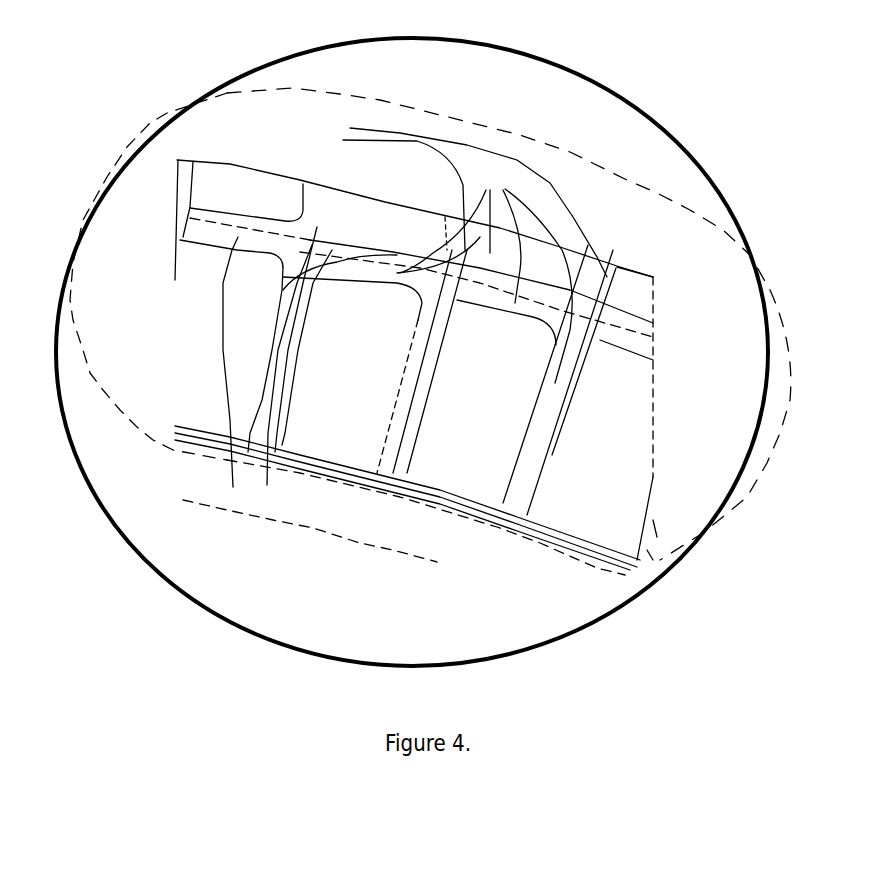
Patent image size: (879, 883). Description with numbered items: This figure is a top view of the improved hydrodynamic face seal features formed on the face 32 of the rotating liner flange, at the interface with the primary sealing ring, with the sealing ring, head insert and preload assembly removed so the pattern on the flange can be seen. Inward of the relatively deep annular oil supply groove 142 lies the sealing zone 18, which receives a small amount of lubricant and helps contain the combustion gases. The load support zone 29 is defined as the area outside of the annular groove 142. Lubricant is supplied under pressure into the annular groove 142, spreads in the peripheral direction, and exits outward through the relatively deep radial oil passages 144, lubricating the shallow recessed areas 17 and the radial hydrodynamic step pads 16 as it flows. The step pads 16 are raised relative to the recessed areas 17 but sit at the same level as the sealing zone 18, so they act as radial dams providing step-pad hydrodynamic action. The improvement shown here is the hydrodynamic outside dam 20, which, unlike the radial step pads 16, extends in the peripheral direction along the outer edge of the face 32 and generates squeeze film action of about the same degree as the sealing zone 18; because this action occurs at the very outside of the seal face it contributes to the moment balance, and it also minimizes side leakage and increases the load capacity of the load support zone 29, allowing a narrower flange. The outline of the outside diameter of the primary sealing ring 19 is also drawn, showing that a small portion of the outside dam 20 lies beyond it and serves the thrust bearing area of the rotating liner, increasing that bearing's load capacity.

The radial hydrodynamic step pad 16 is at (484, 275).
The recessed area 17 is at (337, 347).
The sealing zone 18 is at (343, 500).
The outside diameter of the primary sealing ring 19 is at (613, 260).
The hydrodynamic outside dam 20 is at (253, 369).
The load support zone 29 is at (377, 102).
The face 32 is at (425, 42).
The annular oil supply groove 142 is at (473, 505).
The radial oil passage 144 is at (332, 250).